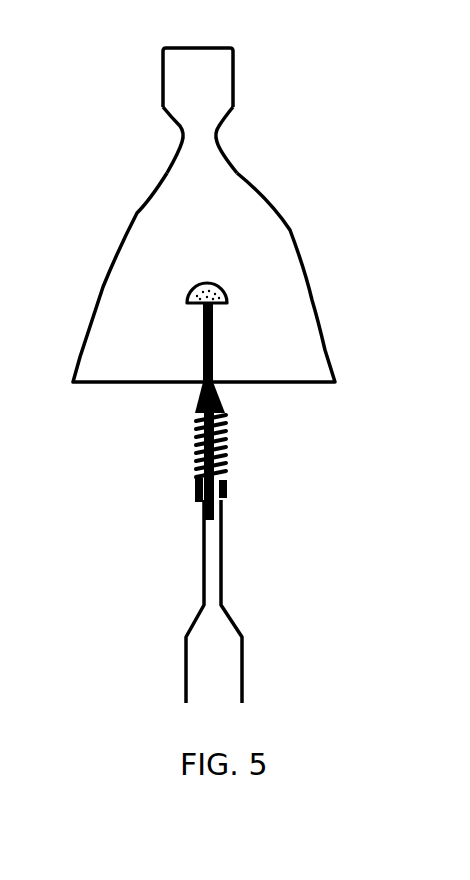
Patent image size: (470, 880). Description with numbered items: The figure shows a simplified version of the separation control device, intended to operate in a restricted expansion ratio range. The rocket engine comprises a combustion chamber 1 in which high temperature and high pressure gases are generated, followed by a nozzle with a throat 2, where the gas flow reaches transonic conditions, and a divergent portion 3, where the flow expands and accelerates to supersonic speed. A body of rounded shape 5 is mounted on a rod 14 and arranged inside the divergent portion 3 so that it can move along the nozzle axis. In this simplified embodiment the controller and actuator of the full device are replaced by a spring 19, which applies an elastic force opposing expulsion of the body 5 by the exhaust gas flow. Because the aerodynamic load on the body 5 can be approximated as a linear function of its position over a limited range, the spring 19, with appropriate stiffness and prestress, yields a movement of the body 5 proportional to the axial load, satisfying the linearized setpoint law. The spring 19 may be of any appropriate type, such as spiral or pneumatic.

The combustion chamber 1 is at (237, 80).
The throat 2 is at (222, 135).
The divergent portion 3 is at (290, 230).
The body of rounded shape 5 is at (227, 287).
The rod 14 is at (213, 333).
The spring 19 is at (226, 440).